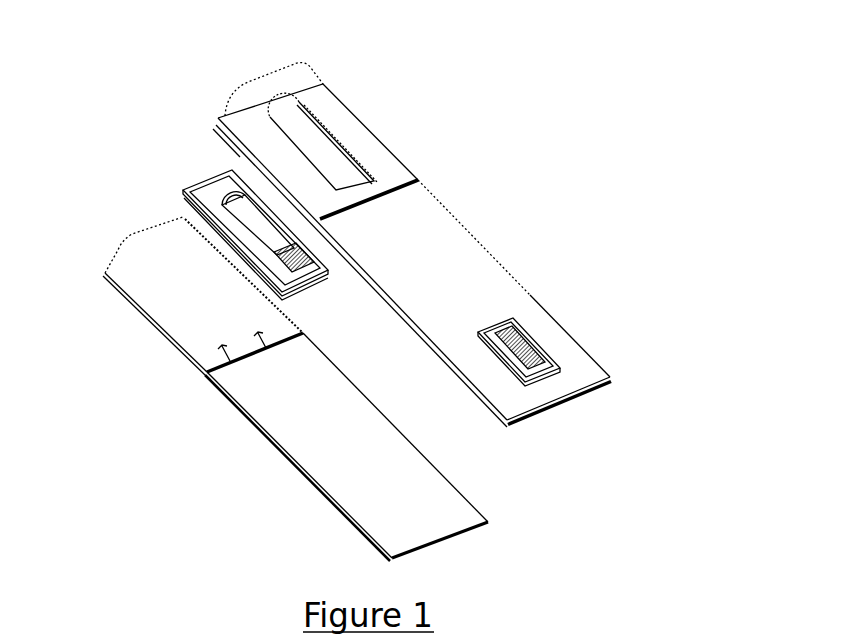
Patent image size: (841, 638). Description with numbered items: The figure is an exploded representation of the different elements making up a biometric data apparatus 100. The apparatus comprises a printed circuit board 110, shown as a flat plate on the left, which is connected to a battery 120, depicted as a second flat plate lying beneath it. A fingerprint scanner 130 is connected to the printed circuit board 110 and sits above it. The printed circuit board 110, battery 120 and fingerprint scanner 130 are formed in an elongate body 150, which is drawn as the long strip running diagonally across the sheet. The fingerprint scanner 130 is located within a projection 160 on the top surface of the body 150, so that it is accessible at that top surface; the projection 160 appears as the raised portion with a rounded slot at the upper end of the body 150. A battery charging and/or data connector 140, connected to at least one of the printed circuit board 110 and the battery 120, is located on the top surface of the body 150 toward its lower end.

The biometric data apparatus 100 is at (376, 79).
The printed circuit board 110 is at (186, 298).
The battery 120 is at (333, 458).
The fingerprint scanner 130 is at (202, 180).
The battery charging and/or data connector 140 is at (547, 351).
The body 150 is at (404, 241).
The projection 160 is at (371, 156).